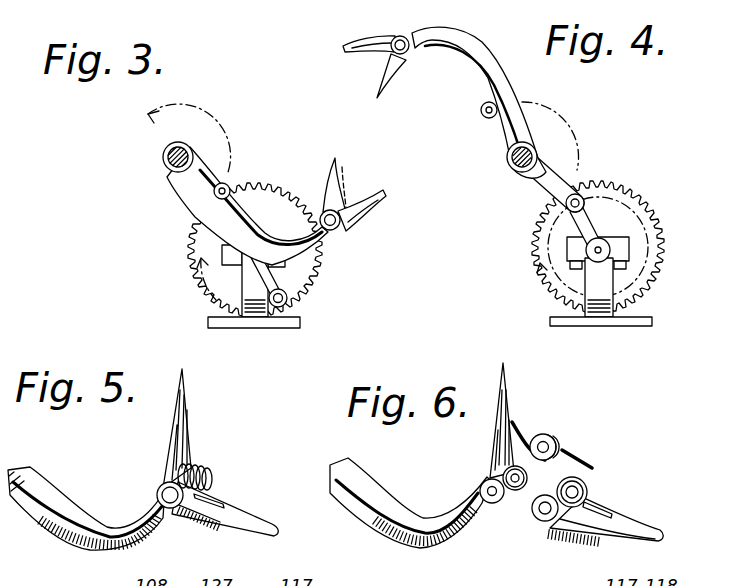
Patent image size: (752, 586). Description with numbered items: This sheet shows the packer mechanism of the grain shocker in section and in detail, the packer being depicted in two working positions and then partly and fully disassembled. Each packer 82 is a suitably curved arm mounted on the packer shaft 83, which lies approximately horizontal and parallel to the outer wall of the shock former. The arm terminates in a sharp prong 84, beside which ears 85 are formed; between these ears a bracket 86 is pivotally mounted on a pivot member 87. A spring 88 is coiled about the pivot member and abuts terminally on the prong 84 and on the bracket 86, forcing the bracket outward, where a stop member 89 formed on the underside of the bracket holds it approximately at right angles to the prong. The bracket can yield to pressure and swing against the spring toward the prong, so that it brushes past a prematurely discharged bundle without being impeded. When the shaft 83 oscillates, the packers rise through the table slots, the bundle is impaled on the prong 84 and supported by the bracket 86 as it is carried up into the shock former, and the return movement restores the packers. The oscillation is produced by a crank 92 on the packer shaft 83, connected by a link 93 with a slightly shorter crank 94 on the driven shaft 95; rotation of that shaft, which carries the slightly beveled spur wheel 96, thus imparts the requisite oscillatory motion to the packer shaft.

In FIG. 3, the packer arm 82 is at (283, 244).
In FIG. 4, the packer arm 82 is at (478, 74).
In FIG. 5, the packer arm 82 is at (67, 518).
In FIG. 6, the packer arm 82 is at (383, 513).
In FIG. 3, the packer shaft 83 is at (170, 166).
In FIG. 4, the packer shaft 83 is at (512, 166).
In FIG. 3, the prong 84 is at (326, 165).
In FIG. 4, the prong 84 is at (383, 93).
In FIG. 5, the prong 84 is at (188, 415).
In FIG. 6, the prong 84 is at (504, 405).
In FIG. 5, the ears 85 is at (198, 477).
In FIG. 6, the ears 85 is at (497, 504).
In FIG. 3, the bracket 86 is at (370, 210).
In FIG. 4, the bracket 86 is at (351, 55).
In FIG. 5, the bracket 86 is at (242, 512).
In FIG. 6, the bracket 86 is at (597, 509).
In FIG. 5, the pivot member 87 is at (172, 500).
In FIG. 5, the spring 88 is at (207, 485).
In FIG. 6, the spring 88 is at (556, 437).
In FIG. 5, the stop member 89 is at (195, 523).
In FIG. 6, the stop member 89 is at (559, 541).
In FIG. 3, the crank 92 is at (209, 167).
In FIG. 4, the crank 92 is at (502, 128).
In FIG. 3, the link 93 is at (236, 207).
In FIG. 4, the link 93 is at (537, 172).
In FIG. 4, the crank 94 is at (598, 248).
In FIG. 3, the driven shaft 95 is at (240, 272).
In FIG. 4, the driven shaft 95 is at (603, 240).
In FIG. 3, the spur wheel 96 is at (323, 256).
In FIG. 4, the spur wheel 96 is at (660, 250).